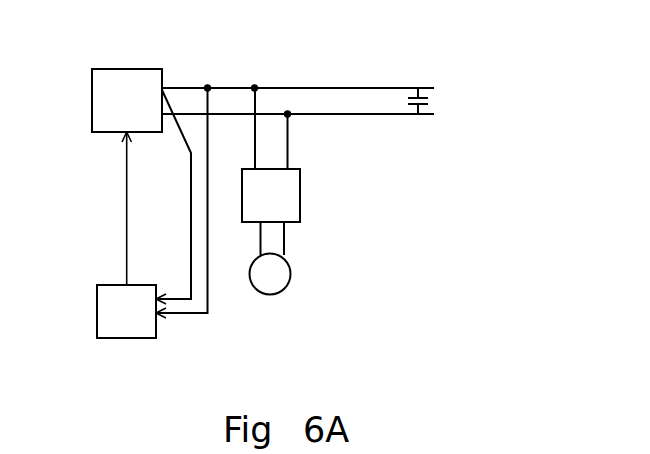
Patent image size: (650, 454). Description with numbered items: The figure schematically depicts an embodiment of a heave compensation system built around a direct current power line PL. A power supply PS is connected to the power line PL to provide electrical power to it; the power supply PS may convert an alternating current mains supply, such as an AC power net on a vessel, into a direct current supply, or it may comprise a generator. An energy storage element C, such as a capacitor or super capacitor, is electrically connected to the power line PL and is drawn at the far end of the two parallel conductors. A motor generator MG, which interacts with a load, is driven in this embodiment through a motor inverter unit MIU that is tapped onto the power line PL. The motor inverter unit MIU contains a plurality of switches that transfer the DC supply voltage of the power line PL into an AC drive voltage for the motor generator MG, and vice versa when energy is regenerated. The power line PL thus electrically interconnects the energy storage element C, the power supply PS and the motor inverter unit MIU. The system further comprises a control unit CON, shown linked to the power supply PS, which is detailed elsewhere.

The power supply PS is at (126, 69).
The power line PL is at (308, 86).
The energy storage element C is at (432, 92).
The motor inverter unit MIU is at (300, 195).
The motor generator MG is at (291, 272).
The control unit CON is at (118, 339).